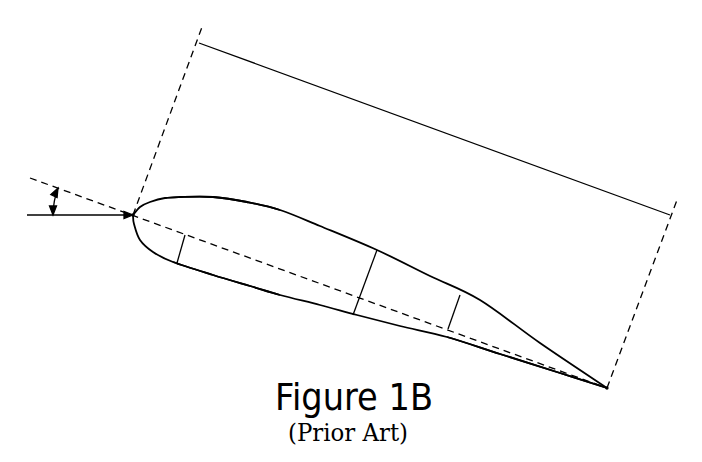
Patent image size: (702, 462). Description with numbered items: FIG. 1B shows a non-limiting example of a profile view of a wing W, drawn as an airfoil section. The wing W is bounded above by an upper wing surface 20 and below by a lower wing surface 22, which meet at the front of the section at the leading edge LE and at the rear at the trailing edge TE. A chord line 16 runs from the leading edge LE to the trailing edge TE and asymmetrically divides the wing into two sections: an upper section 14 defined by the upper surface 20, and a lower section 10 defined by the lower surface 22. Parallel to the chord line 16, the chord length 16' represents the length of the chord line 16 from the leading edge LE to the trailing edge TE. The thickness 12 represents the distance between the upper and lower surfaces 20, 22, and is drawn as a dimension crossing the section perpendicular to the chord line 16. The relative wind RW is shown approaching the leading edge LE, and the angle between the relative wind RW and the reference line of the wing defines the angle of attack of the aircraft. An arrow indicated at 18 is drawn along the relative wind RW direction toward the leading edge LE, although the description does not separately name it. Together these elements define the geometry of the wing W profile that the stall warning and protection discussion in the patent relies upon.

The lower wing section 10 is at (177, 248).
The thickness 12 is at (349, 300).
The upper wing section 14 is at (460, 315).
The chord line 16 is at (527, 377).
The chord length 16' is at (408, 207).
The relative wind direction 18 is at (108, 220).
The upper wing surface 20 is at (245, 198).
The lower wing surface 22 is at (233, 288).
The wing W is at (343, 246).
The leading edge LE is at (133, 213).
The trailing edge TE is at (607, 388).
The relative wind RW is at (33, 217).